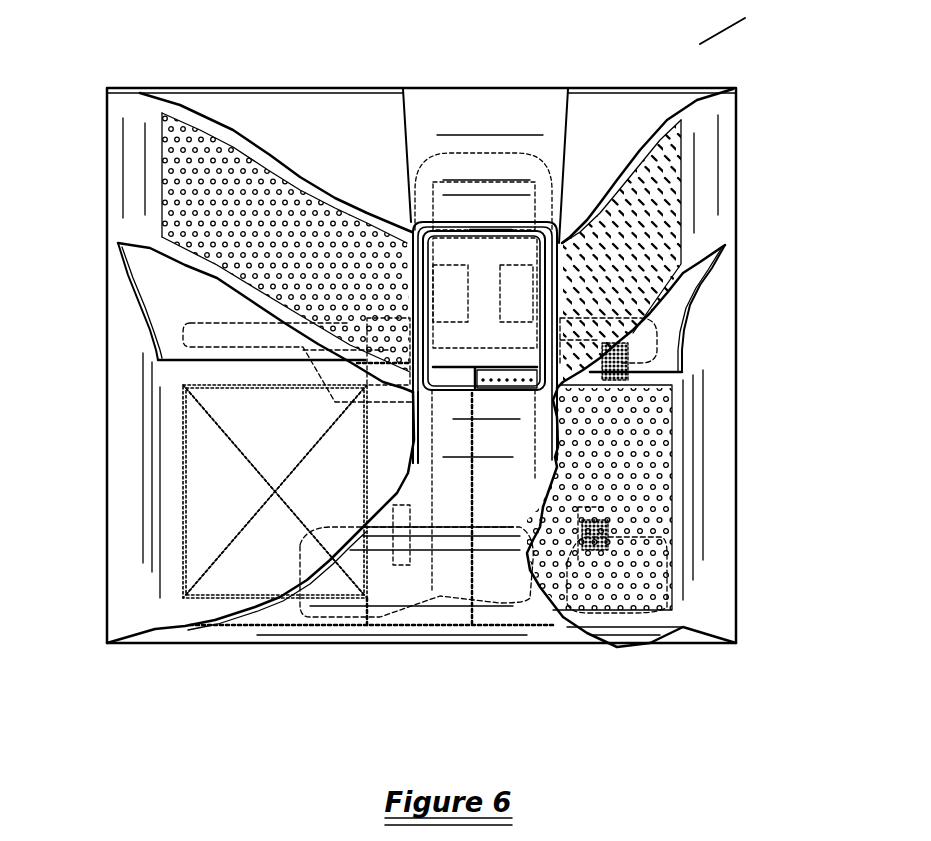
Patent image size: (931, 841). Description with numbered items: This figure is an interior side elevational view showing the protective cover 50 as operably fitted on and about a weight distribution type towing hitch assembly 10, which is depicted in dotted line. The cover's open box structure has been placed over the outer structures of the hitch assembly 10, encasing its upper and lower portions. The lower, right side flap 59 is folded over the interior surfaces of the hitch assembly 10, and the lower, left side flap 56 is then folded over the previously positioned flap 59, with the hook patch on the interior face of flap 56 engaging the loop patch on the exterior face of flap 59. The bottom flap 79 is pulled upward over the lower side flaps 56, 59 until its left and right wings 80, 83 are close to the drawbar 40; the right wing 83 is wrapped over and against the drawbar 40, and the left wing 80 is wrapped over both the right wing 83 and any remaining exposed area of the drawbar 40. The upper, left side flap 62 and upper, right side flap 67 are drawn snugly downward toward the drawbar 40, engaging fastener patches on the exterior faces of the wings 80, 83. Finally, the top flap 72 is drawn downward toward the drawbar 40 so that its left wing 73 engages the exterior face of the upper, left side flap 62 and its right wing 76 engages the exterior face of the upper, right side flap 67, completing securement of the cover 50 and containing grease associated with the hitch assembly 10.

The weight distribution hitch assembly 10 is at (386, 186).
The drawbar 40 is at (480, 250).
The protective cover 50 is at (441, 325).
The lower, left side flap 56 is at (240, 499).
The lower, right side flap 59 is at (623, 497).
The upper, left side flap 62 is at (247, 193).
The upper, right side flap 67 is at (647, 224).
The top flap 72 is at (427, 98).
The left wing 73 is at (418, 453).
The right wing 76 is at (550, 438).
The bottom flap 79 is at (487, 577).
The left wing 80 is at (460, 235).
The right wing 83 is at (512, 238).